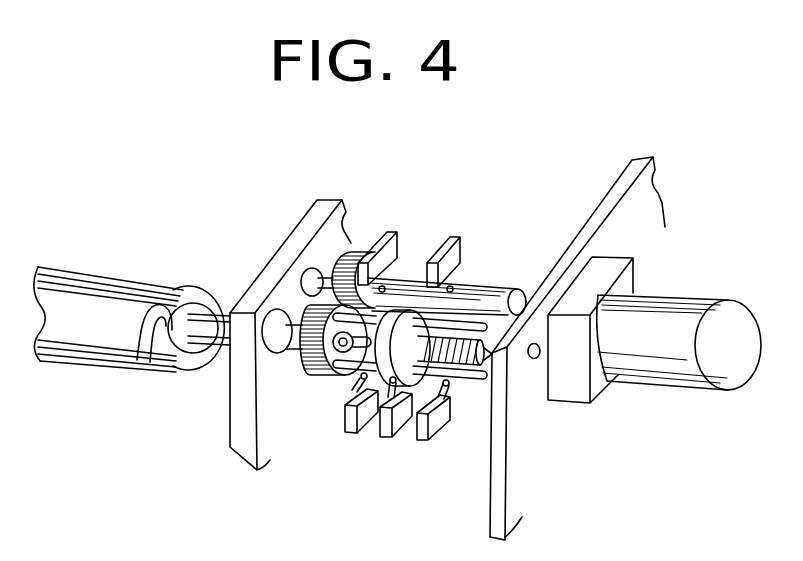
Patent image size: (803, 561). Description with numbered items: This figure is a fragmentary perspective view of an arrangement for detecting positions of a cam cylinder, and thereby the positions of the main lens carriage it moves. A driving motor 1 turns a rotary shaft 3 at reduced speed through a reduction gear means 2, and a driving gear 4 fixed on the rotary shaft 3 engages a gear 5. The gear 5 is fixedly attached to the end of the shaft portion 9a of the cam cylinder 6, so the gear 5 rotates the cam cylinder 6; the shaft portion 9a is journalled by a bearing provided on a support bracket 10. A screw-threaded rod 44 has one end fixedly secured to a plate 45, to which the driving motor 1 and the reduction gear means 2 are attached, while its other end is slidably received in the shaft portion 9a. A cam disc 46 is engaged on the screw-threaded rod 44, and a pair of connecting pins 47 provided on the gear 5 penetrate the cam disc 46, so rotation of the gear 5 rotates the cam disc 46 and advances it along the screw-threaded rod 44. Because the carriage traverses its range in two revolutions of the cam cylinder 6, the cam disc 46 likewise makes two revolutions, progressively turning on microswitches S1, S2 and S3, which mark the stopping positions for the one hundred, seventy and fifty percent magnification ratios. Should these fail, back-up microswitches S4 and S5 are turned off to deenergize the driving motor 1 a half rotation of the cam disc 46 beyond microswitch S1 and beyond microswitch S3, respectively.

The driving motor 1 is at (705, 295).
The reduction gear means 2 is at (578, 387).
The rotary shaft 3 is at (495, 285).
The driving gear 4 is at (338, 262).
The gear 5 is at (312, 372).
The cam cylinder 6 is at (120, 268).
The shaft portion 9a is at (214, 333).
The support bracket 10 is at (266, 282).
The screw-threaded rod 44 is at (490, 357).
The plate 45 is at (633, 212).
The cam disc 46 is at (420, 377).
The connecting pins 47 is at (458, 323).
The microswitch S1 is at (342, 423).
The microswitch S2 is at (385, 437).
The microswitch S3 is at (442, 430).
The microswitch S4 is at (384, 232).
The microswitch S5 is at (450, 237).